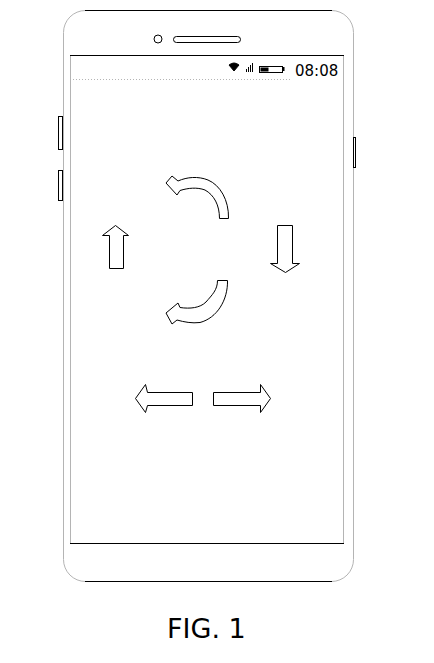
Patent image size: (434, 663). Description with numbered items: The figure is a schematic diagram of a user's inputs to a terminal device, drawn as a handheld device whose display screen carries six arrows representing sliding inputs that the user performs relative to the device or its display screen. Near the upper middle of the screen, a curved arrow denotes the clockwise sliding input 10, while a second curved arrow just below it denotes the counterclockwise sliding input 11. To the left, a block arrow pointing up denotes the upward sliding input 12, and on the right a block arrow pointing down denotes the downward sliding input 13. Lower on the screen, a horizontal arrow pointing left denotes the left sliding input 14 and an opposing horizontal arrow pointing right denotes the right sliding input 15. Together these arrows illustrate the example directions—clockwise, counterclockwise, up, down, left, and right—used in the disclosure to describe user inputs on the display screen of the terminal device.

The clockwise sliding input 10 is at (225, 303).
The counterclockwise sliding input 11 is at (216, 186).
The upward sliding input 12 is at (121, 254).
The downward sliding input 13 is at (292, 250).
The left sliding input 14 is at (157, 392).
The right sliding input 15 is at (240, 392).